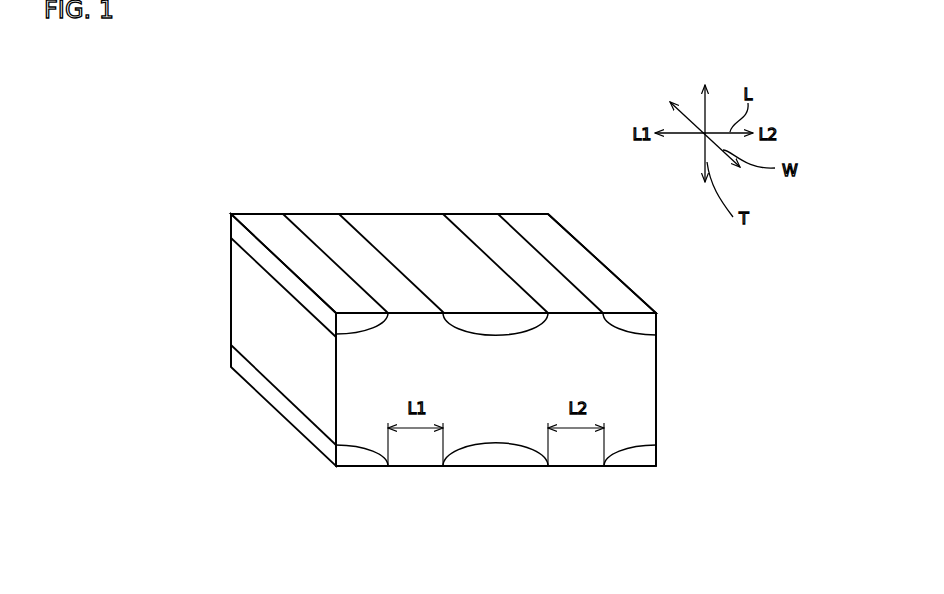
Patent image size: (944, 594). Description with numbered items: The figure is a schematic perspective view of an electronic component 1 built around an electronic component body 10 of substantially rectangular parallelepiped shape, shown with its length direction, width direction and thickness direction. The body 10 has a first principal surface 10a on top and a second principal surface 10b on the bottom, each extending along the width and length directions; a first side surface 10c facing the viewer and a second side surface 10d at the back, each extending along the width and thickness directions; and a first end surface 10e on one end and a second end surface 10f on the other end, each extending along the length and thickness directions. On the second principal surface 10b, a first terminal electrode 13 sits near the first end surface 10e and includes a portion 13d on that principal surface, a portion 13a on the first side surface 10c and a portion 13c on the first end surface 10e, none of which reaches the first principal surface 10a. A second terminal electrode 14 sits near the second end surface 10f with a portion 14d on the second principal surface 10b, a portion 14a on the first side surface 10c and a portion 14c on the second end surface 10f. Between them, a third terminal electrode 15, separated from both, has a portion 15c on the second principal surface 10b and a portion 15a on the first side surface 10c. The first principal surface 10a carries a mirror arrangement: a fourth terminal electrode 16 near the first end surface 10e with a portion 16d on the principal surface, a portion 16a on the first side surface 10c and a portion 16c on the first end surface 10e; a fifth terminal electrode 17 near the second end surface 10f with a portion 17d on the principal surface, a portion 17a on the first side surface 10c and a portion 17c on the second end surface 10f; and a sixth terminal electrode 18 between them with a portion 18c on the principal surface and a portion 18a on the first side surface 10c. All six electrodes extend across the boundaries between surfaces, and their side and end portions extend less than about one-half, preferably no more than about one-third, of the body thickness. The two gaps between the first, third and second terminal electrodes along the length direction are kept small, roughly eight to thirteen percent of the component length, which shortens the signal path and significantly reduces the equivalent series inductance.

The electronic component 1 is at (536, 163).
The electronic component body 10 is at (658, 387).
The first principal surface 10a is at (483, 225).
The second principal surface 10b is at (573, 467).
The first side surface 10c is at (433, 445).
The second side surface 10d is at (231, 298).
The first end surface 10e is at (242, 327).
The second end surface 10f is at (657, 413).
The first terminal electrode 13 is at (343, 468).
The portion of first terminal electrode on first side surface 13a is at (350, 459).
The portion of first terminal electrode on first end surface 13c is at (273, 400).
The portion of first terminal electrode on second principal surface 13d is at (368, 467).
The second terminal electrode 14 is at (640, 468).
The portion of second terminal electrode on first side surface 14a is at (648, 458).
The portion of second terminal electrode on second end surface 14c is at (657, 449).
The portion of second terminal electrode on second principal surface 14d is at (620, 467).
The third terminal electrode 15 is at (497, 468).
The portion of third terminal electrode on first side surface 15a is at (475, 457).
The portion of third terminal electrode on second principal surface 15c is at (517, 467).
The fourth terminal electrode 16 is at (258, 211).
The portion of fourth terminal electrode on first side surface 16a is at (353, 323).
The portion of fourth terminal electrode on first end surface 16c is at (243, 235).
The portion of fourth terminal electrode on first principal surface 16d is at (273, 225).
The fifth terminal electrode 17 is at (548, 212).
The portion of fifth terminal electrode on first side surface 17a is at (642, 323).
The portion of fifth terminal electrode on second end surface 17c is at (657, 322).
The portion of fifth terminal electrode on first principal surface 17d is at (527, 220).
The sixth terminal electrode 18 is at (400, 212).
The portion of sixth terminal electrode on first side surface 18a is at (502, 320).
The portion of sixth terminal electrode on first principal surface 18c is at (388, 227).